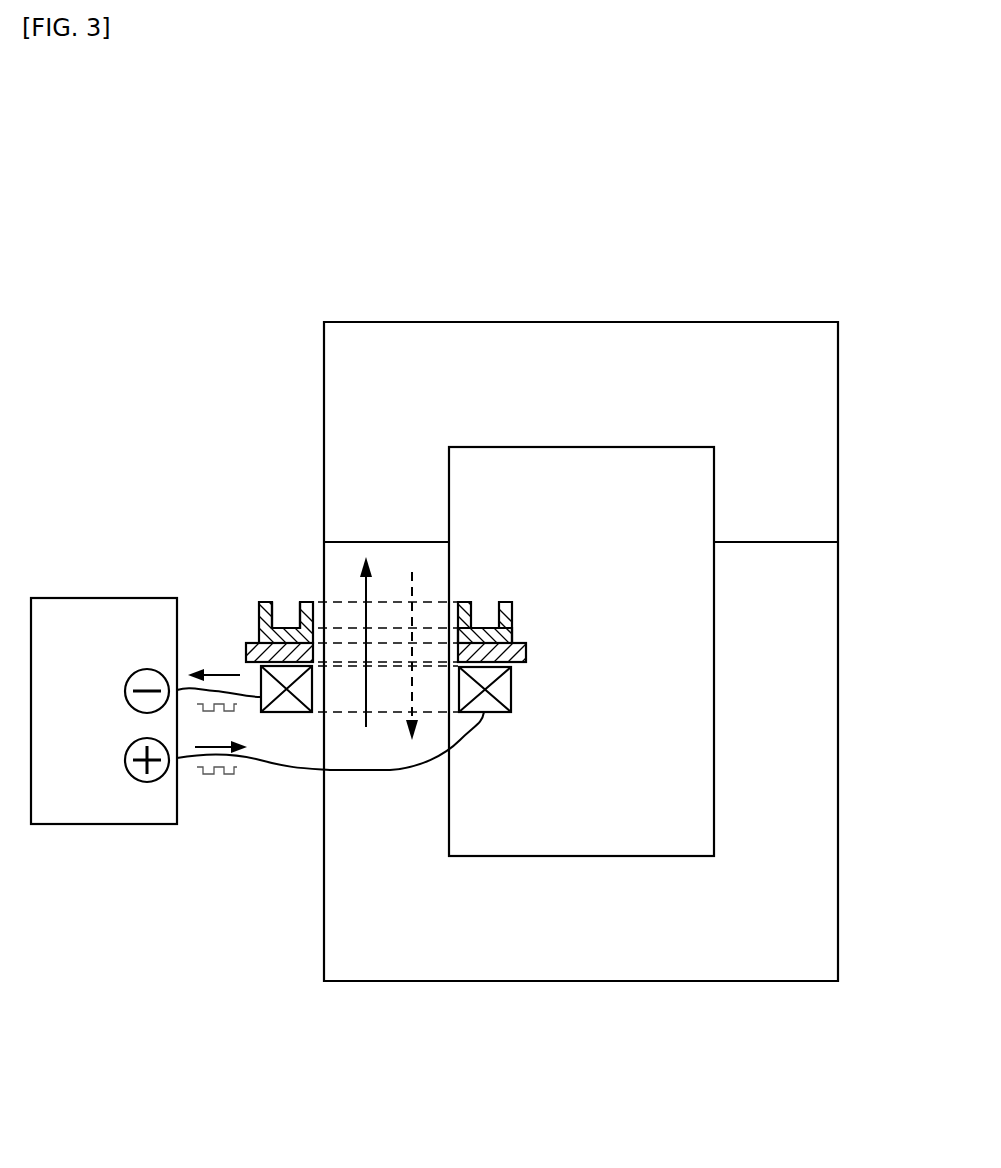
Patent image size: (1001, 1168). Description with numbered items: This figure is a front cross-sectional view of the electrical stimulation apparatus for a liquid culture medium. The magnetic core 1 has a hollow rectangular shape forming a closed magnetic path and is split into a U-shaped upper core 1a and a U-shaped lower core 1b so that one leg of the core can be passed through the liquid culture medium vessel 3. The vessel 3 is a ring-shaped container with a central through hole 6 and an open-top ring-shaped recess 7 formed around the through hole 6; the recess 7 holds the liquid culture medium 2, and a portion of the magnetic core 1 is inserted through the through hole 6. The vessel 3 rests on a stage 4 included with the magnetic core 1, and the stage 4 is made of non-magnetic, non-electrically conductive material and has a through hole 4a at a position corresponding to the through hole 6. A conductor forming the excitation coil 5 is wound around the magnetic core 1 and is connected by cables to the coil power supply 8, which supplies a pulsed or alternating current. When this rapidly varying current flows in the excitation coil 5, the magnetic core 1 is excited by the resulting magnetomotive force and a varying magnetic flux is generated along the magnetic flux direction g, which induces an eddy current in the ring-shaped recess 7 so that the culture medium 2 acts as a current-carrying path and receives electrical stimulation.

The magnetic core 1 is at (635, 651).
The upper core 1a is at (743, 387).
The lower core 1b is at (806, 590).
The liquid culture medium 2 is at (483, 618).
The liquid culture medium vessel 3 is at (262, 636).
The stage 4 is at (497, 653).
The through hole 4a is at (458, 643).
The excitation coil 5 is at (498, 687).
The through hole 6 is at (317, 605).
The recess 7 is at (287, 627).
The coil power supply 8 is at (92, 633).
The magnetic flux direction g is at (412, 702).